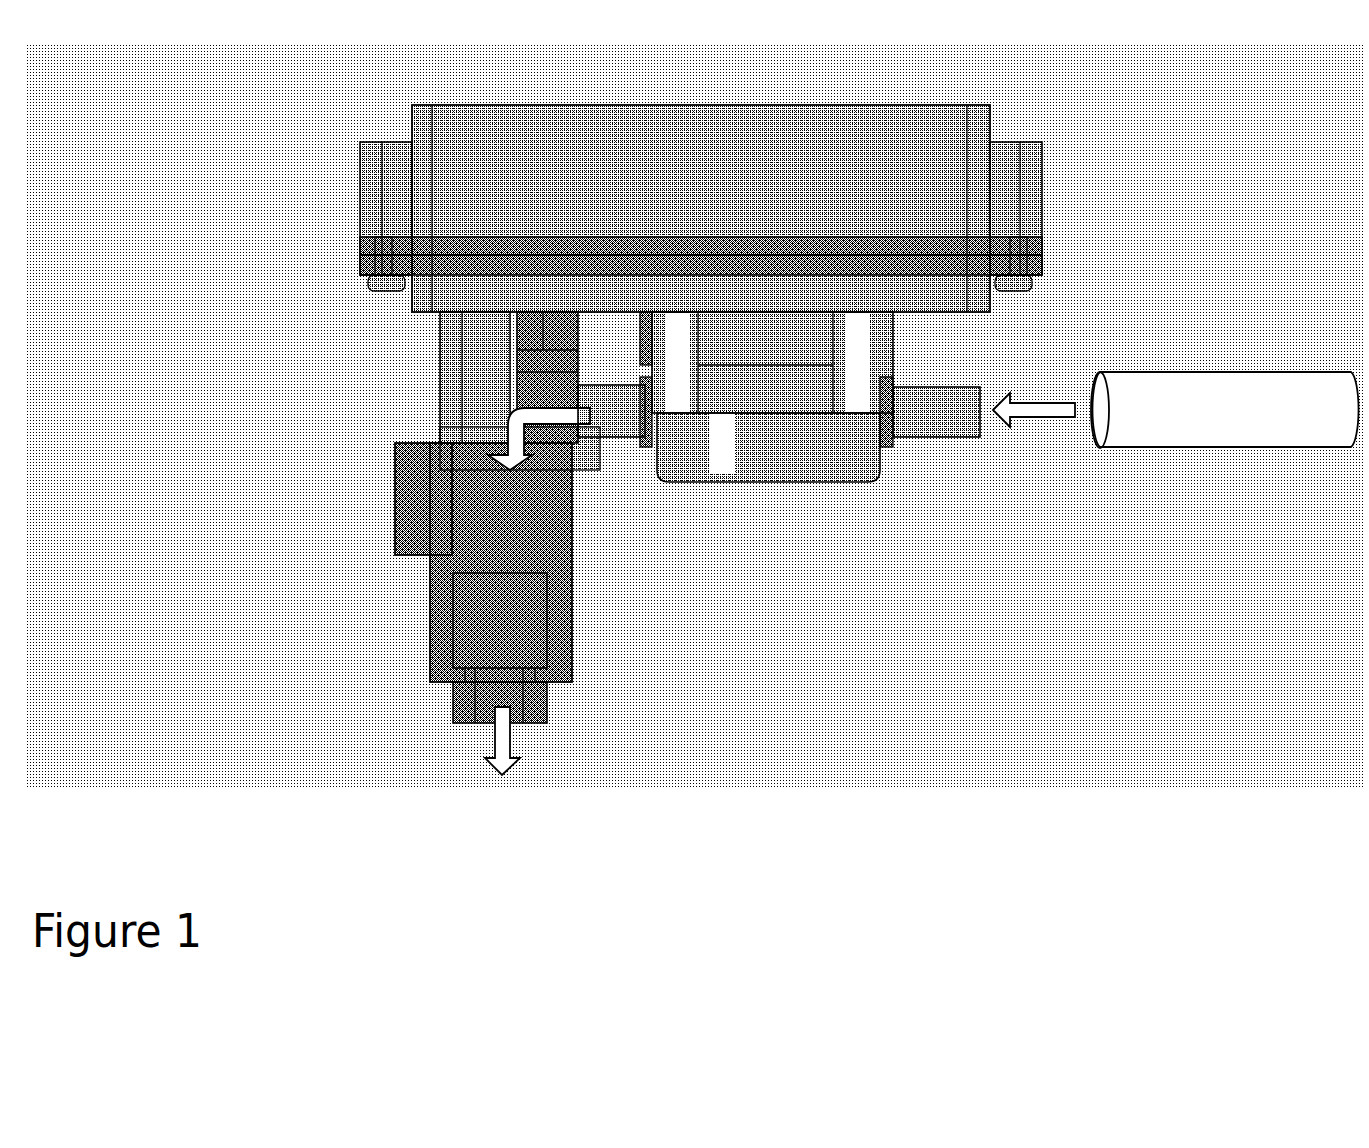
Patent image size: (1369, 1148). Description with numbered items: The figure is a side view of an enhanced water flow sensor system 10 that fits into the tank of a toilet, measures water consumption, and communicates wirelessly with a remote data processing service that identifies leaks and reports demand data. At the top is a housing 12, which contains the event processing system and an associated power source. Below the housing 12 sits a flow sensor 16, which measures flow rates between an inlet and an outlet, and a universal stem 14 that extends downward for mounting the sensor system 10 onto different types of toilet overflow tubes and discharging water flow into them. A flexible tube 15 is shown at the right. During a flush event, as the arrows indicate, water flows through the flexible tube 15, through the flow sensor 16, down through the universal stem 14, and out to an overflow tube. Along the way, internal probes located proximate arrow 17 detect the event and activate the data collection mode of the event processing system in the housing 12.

The water flow sensor system 10 is at (786, 440).
The housing 12 is at (701, 208).
The universal stem 14 is at (380, 425).
The flexible tube 15 is at (1226, 442).
The flow sensor 16 is at (750, 503).
The arrow 17 is at (565, 413).